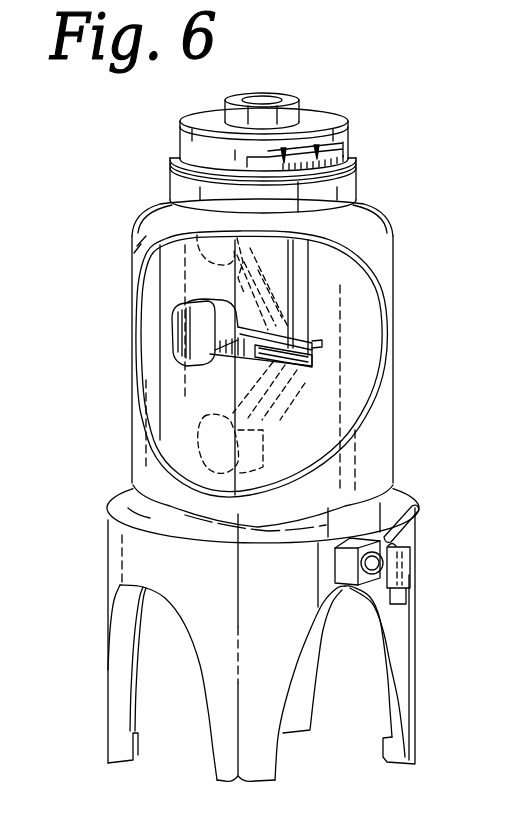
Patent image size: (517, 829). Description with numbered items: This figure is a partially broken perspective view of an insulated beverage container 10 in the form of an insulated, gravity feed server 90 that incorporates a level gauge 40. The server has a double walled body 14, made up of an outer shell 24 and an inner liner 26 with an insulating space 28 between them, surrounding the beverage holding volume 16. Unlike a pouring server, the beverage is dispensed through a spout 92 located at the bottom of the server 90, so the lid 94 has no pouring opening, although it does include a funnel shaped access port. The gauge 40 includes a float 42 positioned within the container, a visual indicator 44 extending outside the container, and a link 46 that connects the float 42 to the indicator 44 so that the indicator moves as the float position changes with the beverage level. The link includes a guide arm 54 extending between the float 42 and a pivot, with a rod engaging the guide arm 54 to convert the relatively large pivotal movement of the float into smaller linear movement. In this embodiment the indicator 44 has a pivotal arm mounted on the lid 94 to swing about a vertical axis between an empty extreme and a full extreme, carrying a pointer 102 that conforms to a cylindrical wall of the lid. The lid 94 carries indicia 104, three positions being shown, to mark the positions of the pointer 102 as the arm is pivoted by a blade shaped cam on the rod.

The insulated beverage container 10 is at (390, 124).
The insulated body 14 is at (378, 427).
The beverage holding volume 16 is at (152, 360).
The outer body or shell 24 is at (370, 289).
The inner body or liner 26 is at (330, 335).
The insulating space 28 is at (310, 360).
The gauge 40 is at (312, 340).
The float 42 is at (173, 322).
The visual indicator 44 is at (372, 141).
The link 46 is at (307, 389).
The guide arm 54 is at (230, 363).
The gravity feed server 90 is at (400, 198).
The spout 92 is at (410, 561).
The lid 94 is at (178, 144).
The pointer 102 is at (303, 143).
The indicia 104 is at (308, 185).